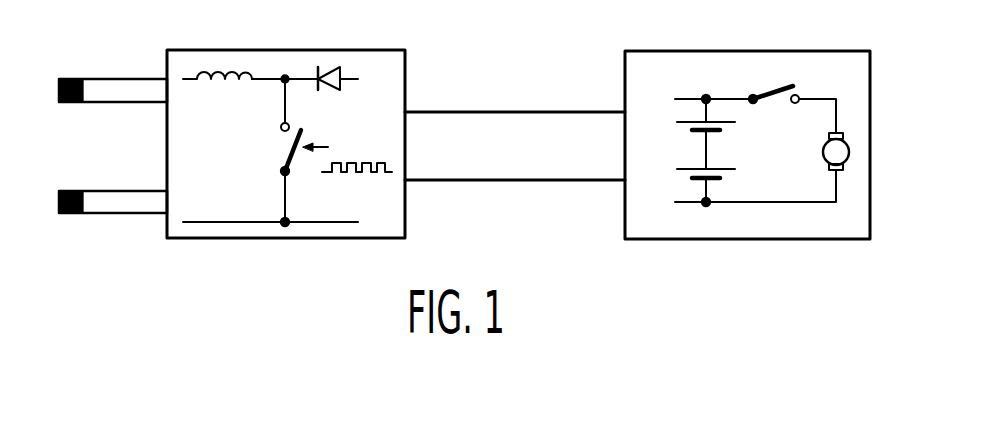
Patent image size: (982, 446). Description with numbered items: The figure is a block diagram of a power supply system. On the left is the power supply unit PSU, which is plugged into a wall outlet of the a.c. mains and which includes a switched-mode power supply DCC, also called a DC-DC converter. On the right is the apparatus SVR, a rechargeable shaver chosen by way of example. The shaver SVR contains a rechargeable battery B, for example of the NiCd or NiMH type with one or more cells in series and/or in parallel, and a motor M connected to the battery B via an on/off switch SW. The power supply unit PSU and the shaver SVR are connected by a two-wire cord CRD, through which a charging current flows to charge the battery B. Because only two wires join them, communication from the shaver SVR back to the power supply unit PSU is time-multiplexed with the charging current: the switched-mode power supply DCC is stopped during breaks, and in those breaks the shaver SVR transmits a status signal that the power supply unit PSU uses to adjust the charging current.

The power supply unit PSU is at (351, 50).
The switched-mode power supply DCC is at (245, 115).
The two-wire cord CRD is at (532, 182).
The shaver SVR is at (663, 52).
The on/off switch SW is at (772, 92).
The rechargeable battery B is at (708, 187).
The motor M is at (824, 152).